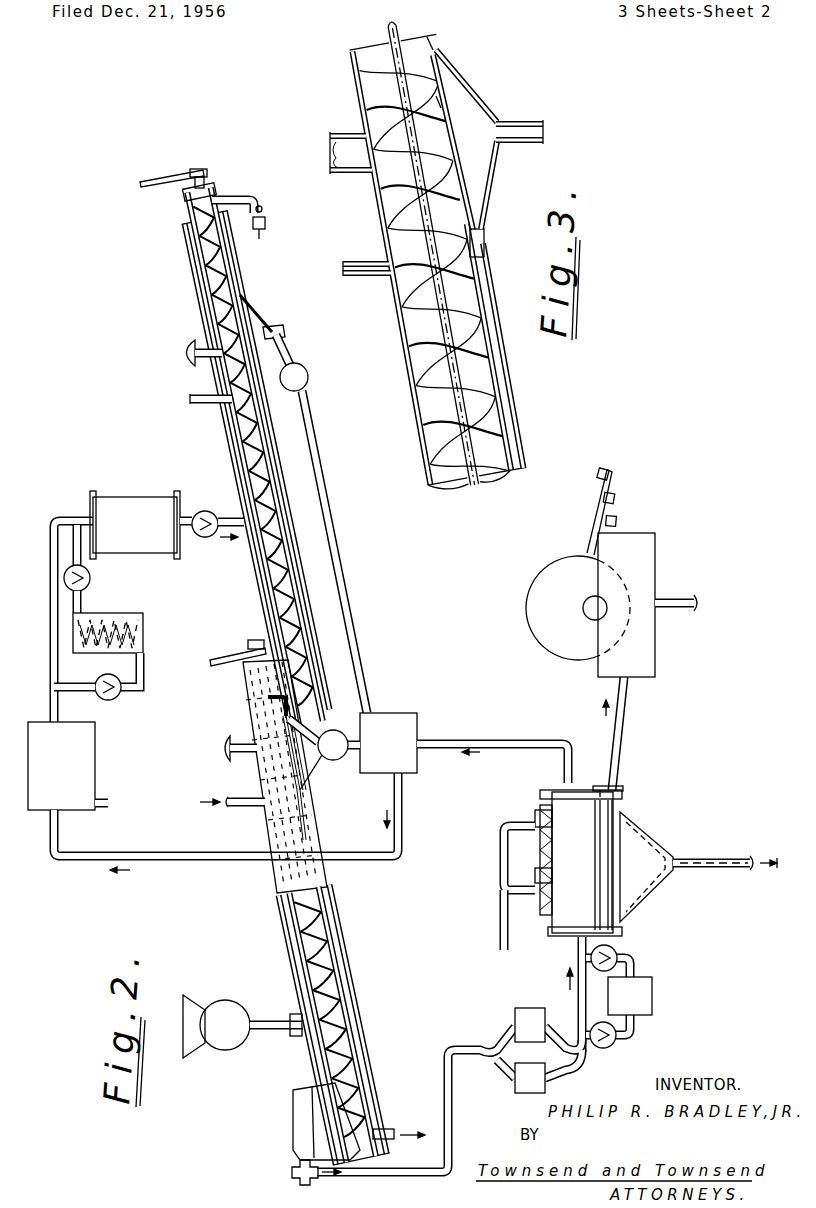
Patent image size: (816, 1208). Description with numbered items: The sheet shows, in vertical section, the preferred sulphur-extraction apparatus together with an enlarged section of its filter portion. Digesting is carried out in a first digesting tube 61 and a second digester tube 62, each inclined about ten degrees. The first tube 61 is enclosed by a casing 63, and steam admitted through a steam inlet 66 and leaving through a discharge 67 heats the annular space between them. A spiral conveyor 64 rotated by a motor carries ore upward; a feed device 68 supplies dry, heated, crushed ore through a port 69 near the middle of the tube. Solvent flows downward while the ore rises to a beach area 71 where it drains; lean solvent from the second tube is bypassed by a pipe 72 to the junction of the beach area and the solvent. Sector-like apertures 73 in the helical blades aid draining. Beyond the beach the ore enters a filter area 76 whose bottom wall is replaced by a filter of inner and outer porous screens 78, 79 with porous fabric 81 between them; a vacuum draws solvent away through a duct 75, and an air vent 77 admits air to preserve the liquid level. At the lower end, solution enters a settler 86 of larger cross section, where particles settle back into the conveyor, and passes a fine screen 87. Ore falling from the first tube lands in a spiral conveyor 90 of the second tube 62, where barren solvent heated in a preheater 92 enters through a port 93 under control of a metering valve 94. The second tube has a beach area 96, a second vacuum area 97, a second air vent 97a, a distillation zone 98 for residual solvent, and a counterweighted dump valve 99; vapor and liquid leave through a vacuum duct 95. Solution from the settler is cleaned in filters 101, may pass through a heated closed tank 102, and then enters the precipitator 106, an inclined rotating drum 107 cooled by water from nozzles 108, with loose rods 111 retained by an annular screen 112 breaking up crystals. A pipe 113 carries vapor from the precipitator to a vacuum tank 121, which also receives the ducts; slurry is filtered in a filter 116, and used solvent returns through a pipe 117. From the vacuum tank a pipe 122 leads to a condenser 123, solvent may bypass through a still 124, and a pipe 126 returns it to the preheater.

In FIG. 3, the first digesting tube 61 is at (517, 407).
In FIG. 2, the first digesting tube 61 is at (292, 947).
In FIG. 2, the second digester tube 62 is at (262, 612).
In FIG. 3, the casing 63 is at (504, 335).
In FIG. 2, the casing 63 is at (295, 970).
In FIG. 3, the spiral conveyor 64 is at (477, 357).
In FIG. 2, the spiral conveyor 64 is at (293, 923).
In FIG. 3, the steam inlet 66 is at (352, 258).
In FIG. 2, the steam inlet 66 is at (230, 797).
In FIG. 2, the discharge 67 is at (383, 1130).
In FIG. 2, the feed device 68 is at (225, 1000).
In FIG. 2, the port 69 is at (294, 1016).
In FIG. 2, the beach area 71 is at (321, 843).
In FIG. 2, the pipe 72 is at (312, 812).
In FIG. 3, the apertures 73 is at (388, 112).
In FIG. 3, the duct 75 is at (507, 122).
In FIG. 2, the duct 75 is at (318, 757).
In FIG. 3, the filter area 76 is at (447, 92).
In FIG. 2, the filter area 76 is at (280, 723).
In FIG. 3, the air vent 77 is at (340, 128).
In FIG. 2, the air vent 77 is at (228, 742).
In FIG. 3, the inner porous screen 78 is at (437, 97).
In FIG. 3, the outer porous screen 79 is at (448, 88).
In FIG. 3, the porous fabric 81 is at (462, 175).
In FIG. 2, the settler 86 is at (315, 1108).
In FIG. 2, the fine screen 87 is at (307, 1142).
In FIG. 2, the spiral conveyor 90 is at (225, 455).
In FIG. 2, the preheater 92 is at (133, 497).
In FIG. 2, the port 93 is at (240, 521).
In FIG. 2, the metering valve 94 is at (203, 511).
In FIG. 2, the vacuum duct 95 is at (283, 330).
In FIG. 2, the beach area 96 is at (300, 500).
In FIG. 2, the second vacuum area 97 is at (253, 360).
In FIG. 2, the second air vent 97a is at (185, 352).
In FIG. 2, the distillation zone 98 is at (240, 294).
In FIG. 2, the dump valve 99 is at (237, 206).
In FIG. 2, the filters 101 is at (527, 1070).
In FIG. 2, the heated closed tank 102 is at (644, 982).
In FIG. 2, the precipitator 106 is at (550, 820).
In FIG. 2, the rotating drum 107 is at (548, 860).
In FIG. 2, the nozzles 108 is at (530, 900).
In FIG. 2, the rods 111 is at (595, 903).
In FIG. 2, the annular screen 112 is at (595, 807).
In FIG. 2, the pipe 113 is at (577, 739).
In FIG. 2, the filter 116 is at (603, 578).
In FIG. 2, the pipe 117 is at (683, 600).
In FIG. 2, the vacuum tank 121 is at (402, 728).
In FIG. 2, the pipe 122 is at (190, 862).
In FIG. 2, the condenser 123 is at (71, 738).
In FIG. 2, the still 124 is at (147, 635).
In FIG. 2, the pipe 126 is at (73, 517).